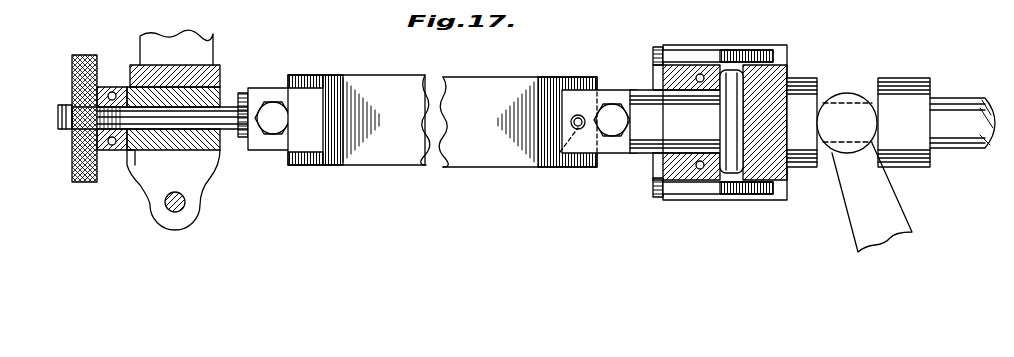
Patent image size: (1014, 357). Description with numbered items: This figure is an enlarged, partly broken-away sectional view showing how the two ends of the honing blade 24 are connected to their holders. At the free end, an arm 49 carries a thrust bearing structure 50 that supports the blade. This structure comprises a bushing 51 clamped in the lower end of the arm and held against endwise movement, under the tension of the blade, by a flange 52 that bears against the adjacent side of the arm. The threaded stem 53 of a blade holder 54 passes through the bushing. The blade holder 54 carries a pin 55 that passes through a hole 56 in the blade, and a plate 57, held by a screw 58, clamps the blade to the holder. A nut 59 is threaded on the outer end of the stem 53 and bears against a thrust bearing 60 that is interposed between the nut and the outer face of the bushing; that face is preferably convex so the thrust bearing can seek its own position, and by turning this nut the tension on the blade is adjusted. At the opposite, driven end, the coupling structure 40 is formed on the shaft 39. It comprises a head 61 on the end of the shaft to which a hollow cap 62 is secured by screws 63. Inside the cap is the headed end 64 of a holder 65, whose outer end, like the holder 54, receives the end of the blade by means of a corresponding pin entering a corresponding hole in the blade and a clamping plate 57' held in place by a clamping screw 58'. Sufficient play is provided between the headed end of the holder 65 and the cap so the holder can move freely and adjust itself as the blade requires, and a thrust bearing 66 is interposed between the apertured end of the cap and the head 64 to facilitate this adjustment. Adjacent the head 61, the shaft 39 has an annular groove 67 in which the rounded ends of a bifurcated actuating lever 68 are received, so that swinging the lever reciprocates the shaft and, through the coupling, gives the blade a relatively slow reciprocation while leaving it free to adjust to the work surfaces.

The honing blade 24 is at (528, 85).
The shaft 39 is at (956, 118).
The coupling structure 40 is at (842, 60).
The arm 49 is at (213, 48).
The thrust bearing structure 50 is at (122, 170).
The bushing 51 is at (200, 195).
The flange 52 is at (127, 72).
The threaded stem 53 is at (218, 113).
The blade holder 54 is at (270, 88).
The pin 55 is at (297, 153).
The hole 56 is at (321, 144).
The plate 57 is at (359, 103).
The clamping plate 57' is at (607, 98).
The screw 58 is at (263, 138).
The clamping screw 58' is at (619, 144).
The nut 59 is at (85, 55).
The thrust bearing 60 is at (110, 152).
The head 61 is at (782, 50).
The hollow cap 62 is at (693, 48).
The screws 63 is at (720, 56).
The headed end 64 is at (740, 92).
The holder 65 is at (696, 126).
The thrust bearing 66 is at (700, 170).
The annular groove 67 is at (872, 90).
The actuating lever 68 is at (866, 222).